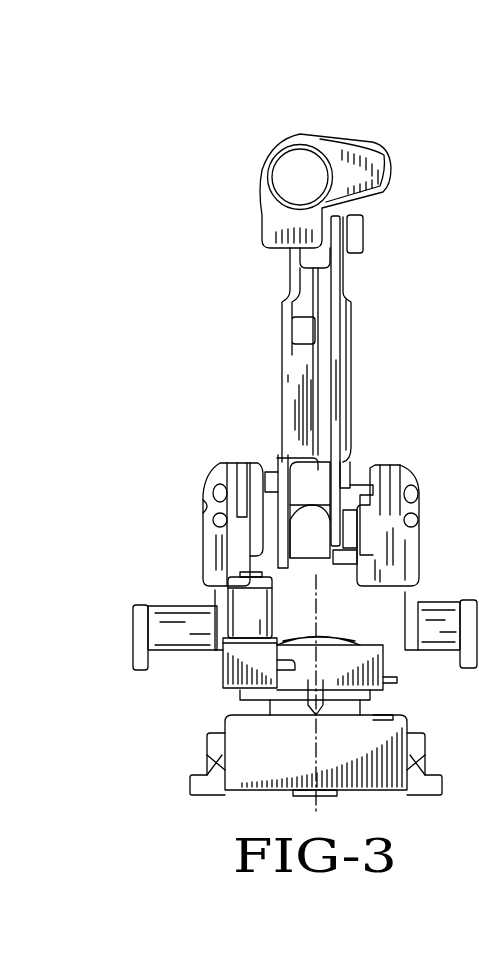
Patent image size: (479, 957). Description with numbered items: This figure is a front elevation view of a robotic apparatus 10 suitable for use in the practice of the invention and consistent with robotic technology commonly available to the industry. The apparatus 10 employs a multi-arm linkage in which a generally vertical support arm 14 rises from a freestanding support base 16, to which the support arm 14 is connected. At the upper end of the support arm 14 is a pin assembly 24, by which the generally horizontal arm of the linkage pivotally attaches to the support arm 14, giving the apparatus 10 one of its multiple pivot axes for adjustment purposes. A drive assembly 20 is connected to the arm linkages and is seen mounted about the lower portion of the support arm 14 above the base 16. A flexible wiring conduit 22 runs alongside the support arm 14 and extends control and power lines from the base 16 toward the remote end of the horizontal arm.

The robotic apparatus 10 is at (200, 148).
The support arm 14 is at (300, 393).
The support base 16 is at (246, 773).
The drive assembly 20 is at (203, 508).
The flexible wiring conduit 22 is at (334, 392).
The pin assembly 24 is at (313, 168).